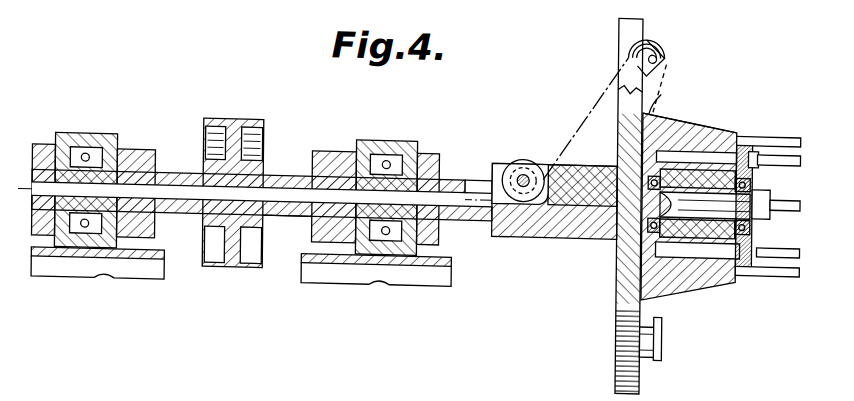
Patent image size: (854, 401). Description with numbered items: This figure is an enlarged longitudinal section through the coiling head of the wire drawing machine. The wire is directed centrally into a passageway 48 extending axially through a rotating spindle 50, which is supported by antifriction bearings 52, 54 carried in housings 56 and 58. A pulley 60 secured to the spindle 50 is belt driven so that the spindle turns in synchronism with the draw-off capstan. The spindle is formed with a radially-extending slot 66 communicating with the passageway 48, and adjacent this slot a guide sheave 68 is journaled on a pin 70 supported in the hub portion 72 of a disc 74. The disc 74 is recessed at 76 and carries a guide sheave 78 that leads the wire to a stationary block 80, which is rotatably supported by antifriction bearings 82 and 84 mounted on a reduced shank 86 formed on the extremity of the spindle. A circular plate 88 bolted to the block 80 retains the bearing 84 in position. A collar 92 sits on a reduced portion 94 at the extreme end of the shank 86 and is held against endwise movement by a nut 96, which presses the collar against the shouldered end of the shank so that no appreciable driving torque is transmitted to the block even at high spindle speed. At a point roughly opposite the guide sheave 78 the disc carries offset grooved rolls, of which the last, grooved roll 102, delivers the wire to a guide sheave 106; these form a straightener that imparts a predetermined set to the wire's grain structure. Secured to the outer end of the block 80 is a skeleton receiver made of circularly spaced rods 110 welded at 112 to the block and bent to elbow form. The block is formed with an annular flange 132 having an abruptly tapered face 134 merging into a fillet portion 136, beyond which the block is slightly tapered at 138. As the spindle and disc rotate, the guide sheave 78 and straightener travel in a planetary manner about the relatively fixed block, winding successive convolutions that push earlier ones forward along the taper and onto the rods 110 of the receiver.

The passageway 48 is at (168, 170).
The rotating spindle 50 is at (288, 217).
The antifriction bearing 52 is at (97, 150).
The antifriction bearing 54 is at (395, 233).
The bearing housing 56 is at (70, 134).
The bearing housing 58 is at (392, 132).
The pulley 60 is at (213, 265).
The radially-extending slot 66 is at (478, 169).
The guide sheave 68 is at (505, 152).
The pin 70 is at (538, 168).
The hub portion 72 is at (553, 226).
The disc 74 is at (617, 292).
The recess 76 is at (628, 15).
The guide sheave 78 is at (652, 22).
The stationary block 80 is at (700, 265).
The antifriction bearing 82 is at (610, 154).
The antifriction bearing 84 is at (742, 252).
The reduced shank 86 is at (705, 225).
The circular plate 88 is at (775, 262).
The collar 92 is at (755, 142).
The reduced portion 94 is at (766, 183).
The nut 96 is at (766, 193).
The grooved roll 102 is at (660, 336).
The guide sheave 106 is at (660, 321).
The rods 110 is at (780, 121).
The securing point 112 is at (751, 118).
The annular flange 132 is at (666, 46).
The tapered face 134 is at (660, 80).
The fillet portion 136 is at (650, 110).
The slightly tapered portion 138 is at (730, 113).